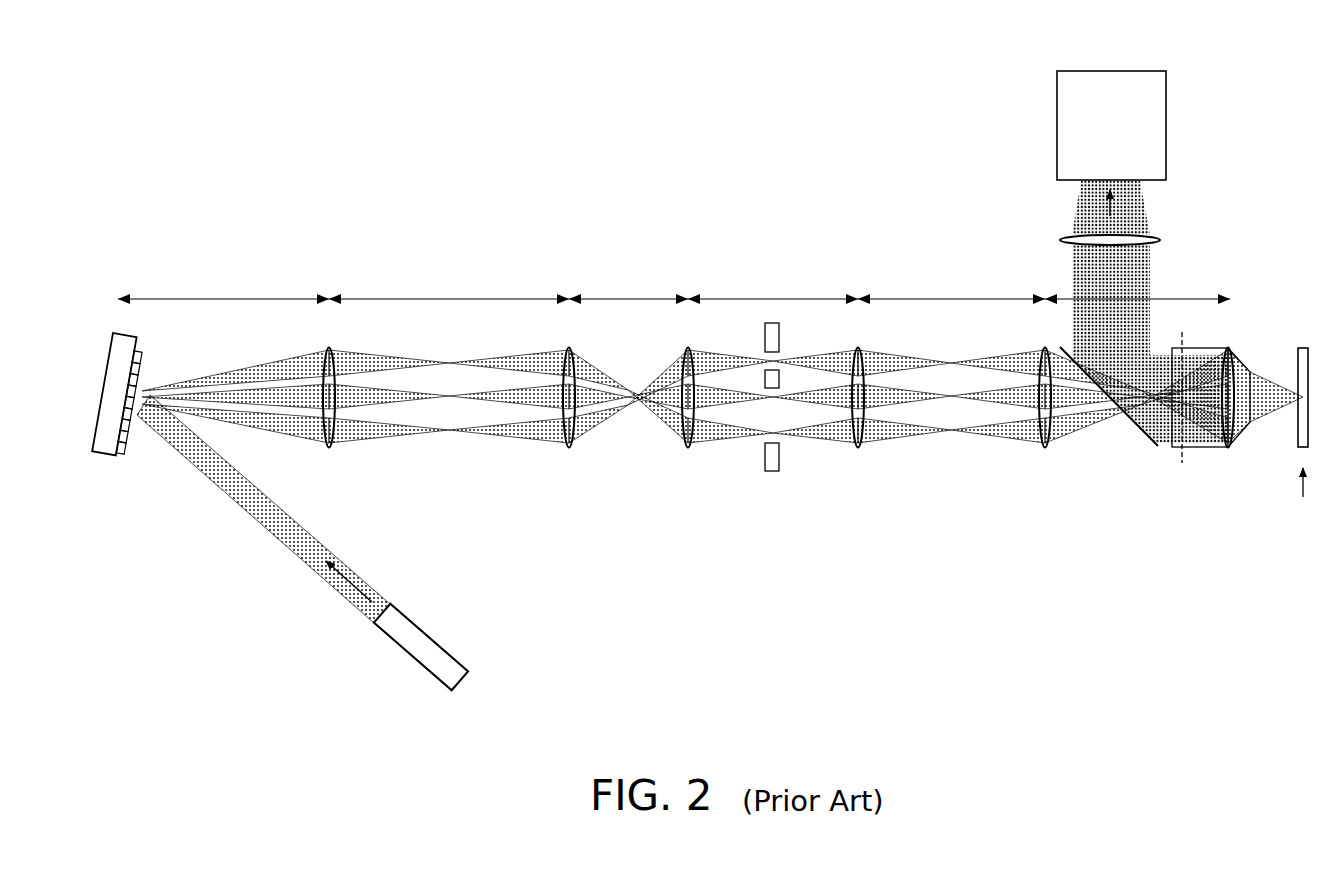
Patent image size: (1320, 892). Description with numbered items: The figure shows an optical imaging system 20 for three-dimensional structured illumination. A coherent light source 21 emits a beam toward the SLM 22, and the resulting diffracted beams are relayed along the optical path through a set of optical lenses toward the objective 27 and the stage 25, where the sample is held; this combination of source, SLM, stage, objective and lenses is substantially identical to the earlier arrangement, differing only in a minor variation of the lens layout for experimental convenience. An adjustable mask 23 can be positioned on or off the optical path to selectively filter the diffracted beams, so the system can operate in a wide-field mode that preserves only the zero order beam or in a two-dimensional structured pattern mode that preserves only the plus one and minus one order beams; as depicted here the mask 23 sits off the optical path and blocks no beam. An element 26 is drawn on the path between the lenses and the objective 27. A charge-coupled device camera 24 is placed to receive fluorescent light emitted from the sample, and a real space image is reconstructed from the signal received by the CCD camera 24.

The optical imaging system 20 is at (134, 73).
The coherent light source 21 is at (437, 630).
The SLM 22 is at (123, 333).
The adjustable mask 23 is at (772, 487).
The charge-coupled device (CCD) camera 24 is at (1168, 126).
The stage 25 is at (1303, 347).
The beam splitter 26 is at (1134, 452).
The objective 27 is at (1197, 448).